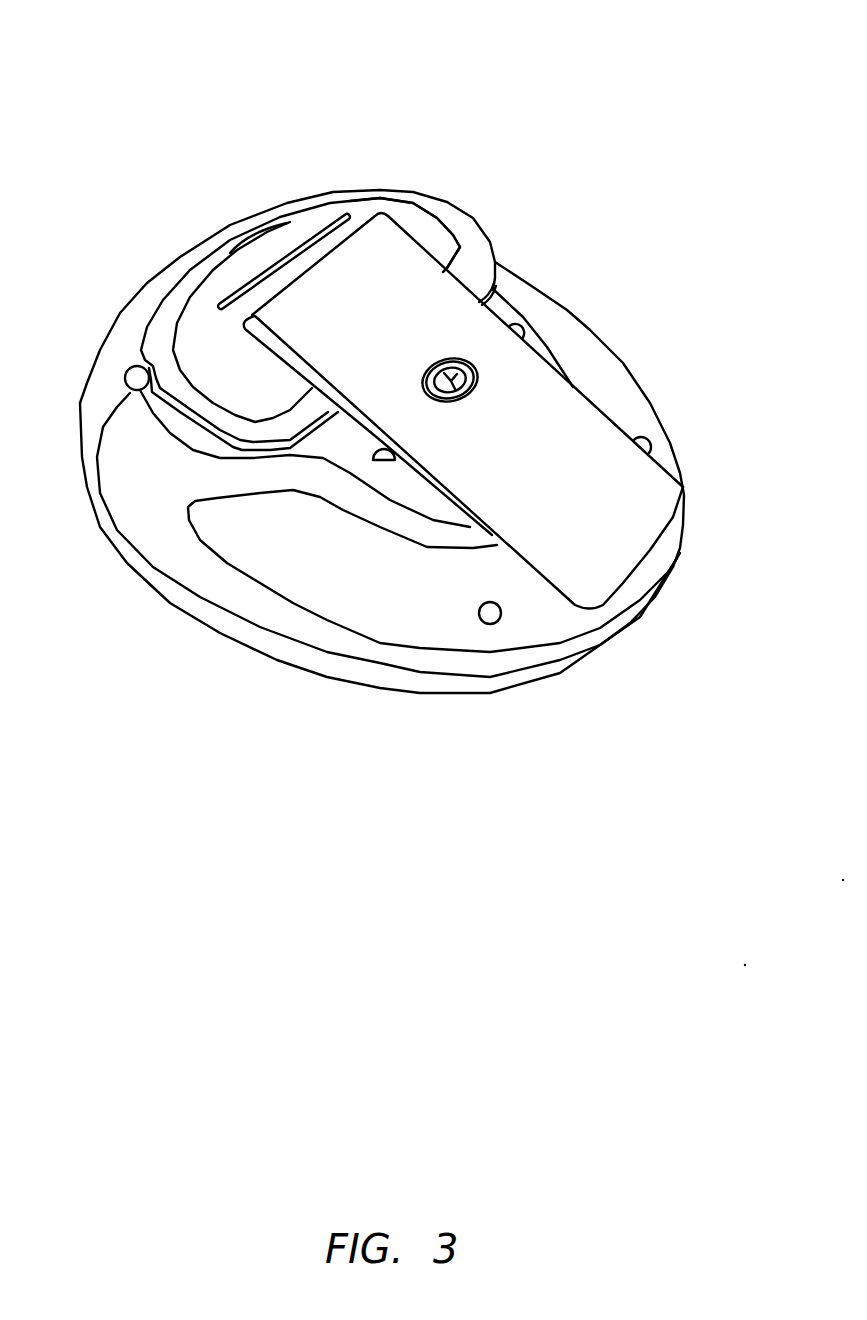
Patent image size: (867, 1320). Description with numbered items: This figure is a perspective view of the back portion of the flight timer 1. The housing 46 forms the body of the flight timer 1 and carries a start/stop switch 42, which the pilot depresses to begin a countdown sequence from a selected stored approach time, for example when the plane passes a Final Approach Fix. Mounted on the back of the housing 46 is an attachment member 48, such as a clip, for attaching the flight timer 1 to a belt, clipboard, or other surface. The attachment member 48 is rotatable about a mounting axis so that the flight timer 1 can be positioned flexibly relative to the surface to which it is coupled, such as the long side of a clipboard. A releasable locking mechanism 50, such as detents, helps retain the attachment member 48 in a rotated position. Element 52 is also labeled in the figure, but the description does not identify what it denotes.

The flight timer 1 is at (655, 84).
The start/stop switch 42 is at (192, 260).
The housing 46 is at (87, 428).
The attachment member 48 is at (600, 532).
The releasable locking mechanism 50 is at (523, 330).
The tab cover 52 is at (413, 227).